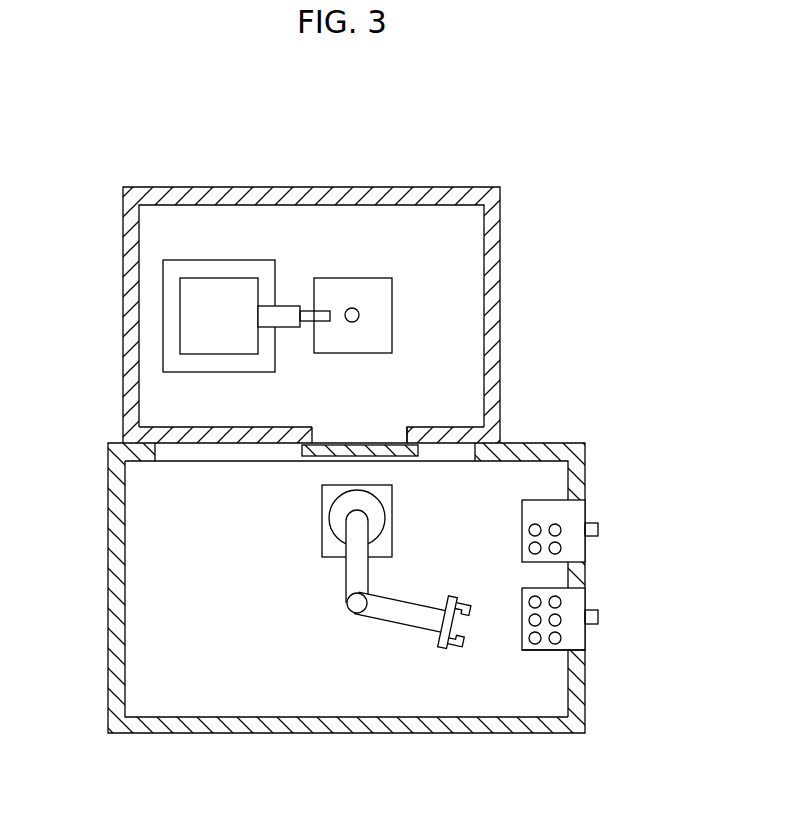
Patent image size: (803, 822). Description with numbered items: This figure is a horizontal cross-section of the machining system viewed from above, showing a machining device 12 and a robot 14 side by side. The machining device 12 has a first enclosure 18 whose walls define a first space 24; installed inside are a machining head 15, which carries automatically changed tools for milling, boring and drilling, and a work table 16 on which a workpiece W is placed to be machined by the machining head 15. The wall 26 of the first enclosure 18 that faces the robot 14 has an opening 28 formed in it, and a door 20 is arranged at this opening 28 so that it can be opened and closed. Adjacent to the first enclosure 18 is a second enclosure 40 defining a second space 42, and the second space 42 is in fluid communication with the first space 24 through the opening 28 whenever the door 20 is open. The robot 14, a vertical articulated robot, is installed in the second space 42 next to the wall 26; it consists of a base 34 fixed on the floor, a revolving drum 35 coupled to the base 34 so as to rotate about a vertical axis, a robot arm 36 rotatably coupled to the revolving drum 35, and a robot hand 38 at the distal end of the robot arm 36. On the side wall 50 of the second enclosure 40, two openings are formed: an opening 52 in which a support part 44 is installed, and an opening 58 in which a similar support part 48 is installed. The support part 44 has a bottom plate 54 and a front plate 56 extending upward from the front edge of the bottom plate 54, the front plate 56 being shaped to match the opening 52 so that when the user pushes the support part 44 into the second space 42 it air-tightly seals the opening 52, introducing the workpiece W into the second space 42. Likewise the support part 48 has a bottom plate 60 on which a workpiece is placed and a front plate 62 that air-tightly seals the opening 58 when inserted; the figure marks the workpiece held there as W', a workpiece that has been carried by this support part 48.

The machining device 12 is at (500, 138).
The robot 14 is at (370, 647).
The machining head 15 is at (287, 313).
The work table 16 is at (370, 278).
The first enclosure 18 is at (498, 218).
The door 20 is at (375, 440).
The first space 24 is at (188, 241).
The wall 26 is at (433, 435).
The opening 28 is at (312, 435).
The base 34 is at (320, 500).
The revolving drum 35 is at (337, 520).
The robot arm 36 is at (424, 597).
The robot hand 38 is at (473, 583).
The second enclosure 40 is at (113, 583).
The second space 42 is at (185, 685).
The support part 44 is at (628, 539).
The support part 48 is at (630, 612).
The side wall 50 is at (575, 693).
The opening 52 is at (586, 506).
The bottom plate 54 is at (570, 549).
The front plate 56 is at (588, 515).
The opening 58 is at (580, 643).
The bottom plate 60 is at (570, 633).
The front plate 62 is at (585, 602).
The workpiece W is at (453, 406).
The processed substrate W' is at (544, 705).